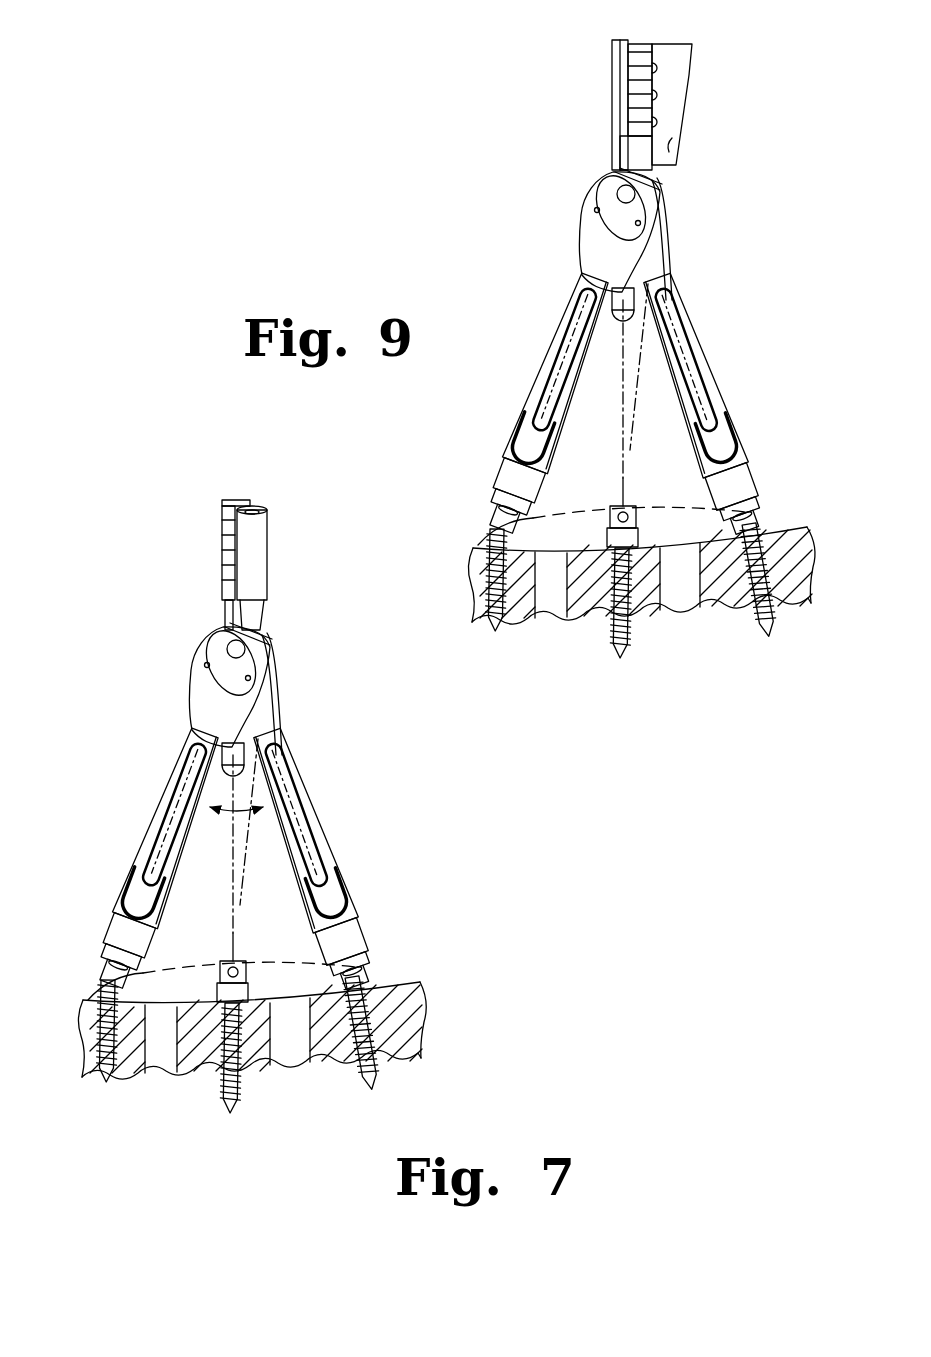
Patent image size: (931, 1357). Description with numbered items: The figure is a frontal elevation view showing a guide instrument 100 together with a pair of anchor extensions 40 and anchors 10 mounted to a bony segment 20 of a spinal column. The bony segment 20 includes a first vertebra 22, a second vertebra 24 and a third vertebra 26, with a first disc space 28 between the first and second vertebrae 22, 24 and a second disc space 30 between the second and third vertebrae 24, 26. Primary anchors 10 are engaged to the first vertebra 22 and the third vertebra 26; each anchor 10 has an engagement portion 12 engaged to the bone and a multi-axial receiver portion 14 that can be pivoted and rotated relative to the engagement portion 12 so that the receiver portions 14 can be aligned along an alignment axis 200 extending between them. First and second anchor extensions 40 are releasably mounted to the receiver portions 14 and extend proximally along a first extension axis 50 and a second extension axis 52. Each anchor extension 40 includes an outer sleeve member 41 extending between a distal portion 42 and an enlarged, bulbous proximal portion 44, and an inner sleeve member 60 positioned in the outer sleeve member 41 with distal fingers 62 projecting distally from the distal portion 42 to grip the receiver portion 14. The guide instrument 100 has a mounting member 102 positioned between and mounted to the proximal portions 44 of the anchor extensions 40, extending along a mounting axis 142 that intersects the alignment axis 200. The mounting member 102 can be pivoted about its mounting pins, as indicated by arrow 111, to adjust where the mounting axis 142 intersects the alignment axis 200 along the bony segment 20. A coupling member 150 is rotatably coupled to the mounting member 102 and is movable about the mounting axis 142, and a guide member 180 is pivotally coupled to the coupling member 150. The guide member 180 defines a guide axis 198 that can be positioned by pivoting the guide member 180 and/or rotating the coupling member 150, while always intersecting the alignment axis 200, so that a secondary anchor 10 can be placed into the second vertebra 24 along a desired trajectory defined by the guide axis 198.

In FIG. 9, the anchor 10 is at (482, 527).
In FIG. 7, the anchor 10 is at (261, 1019).
In FIG. 7, the engagement portion 12 is at (262, 1044).
In FIG. 7, the receiver portion 14 is at (234, 957).
In FIG. 9, the bony segment 20 is at (642, 564).
In FIG. 7, the bony segment 20 is at (312, 1061).
In FIG. 9, the first vertebra 22 is at (800, 607).
In FIG. 7, the first vertebra 22 is at (431, 1045).
In FIG. 9, the second vertebra 24 is at (643, 628).
In FIG. 7, the second vertebra 24 is at (230, 1069).
In FIG. 9, the third vertebra 26 is at (473, 620).
In FIG. 7, the third vertebra 26 is at (108, 1070).
In FIG. 9, the first disc space 28 is at (693, 627).
In FIG. 7, the first disc space 28 is at (299, 1067).
In FIG. 9, the second disc space 30 is at (543, 630).
In FIG. 7, the second disc space 30 is at (165, 1070).
In FIG. 9, the anchor extension 40 is at (528, 383).
In FIG. 7, the anchor extension 40 is at (222, 829).
In FIG. 9, the outer sleeve member 41 is at (557, 327).
In FIG. 7, the outer sleeve member 41 is at (235, 833).
In FIG. 9, the distal portion 42 is at (498, 470).
In FIG. 9, the proximal portion 44 is at (604, 174).
In FIG. 7, the proximal portion 44 is at (245, 672).
In FIG. 7, the first extension axis 50 is at (310, 832).
In FIG. 7, the second extension axis 52 is at (162, 830).
In FIG. 9, the inner sleeve member 60 is at (526, 430).
In FIG. 7, the inner sleeve member 60 is at (213, 894).
In FIG. 9, the distal fingers 62 is at (495, 487).
In FIG. 7, the distal fingers 62 is at (253, 946).
In FIG. 9, the guide instrument 100 is at (722, 111).
In FIG. 7, the guide instrument 100 is at (235, 707).
In FIG. 9, the mounting member 102 is at (613, 273).
In FIG. 7, the mounting member 102 is at (286, 734).
In FIG. 7, the arrow 111 is at (229, 833).
In FIG. 9, the mounting axis 142 is at (622, 420).
In FIG. 7, the mounting axis 142 is at (203, 844).
In FIG. 9, the coupling member 150 is at (605, 82).
In FIG. 7, the coupling member 150 is at (275, 531).
In FIG. 9, the guide member 180 is at (700, 70).
In FIG. 7, the guide member 180 is at (281, 568).
In FIG. 9, the guide axis 198 is at (633, 440).
In FIG. 7, the guide axis 198 is at (265, 822).
In FIG. 9, the alignment axis 200 is at (582, 517).
In FIG. 7, the alignment axis 200 is at (249, 953).